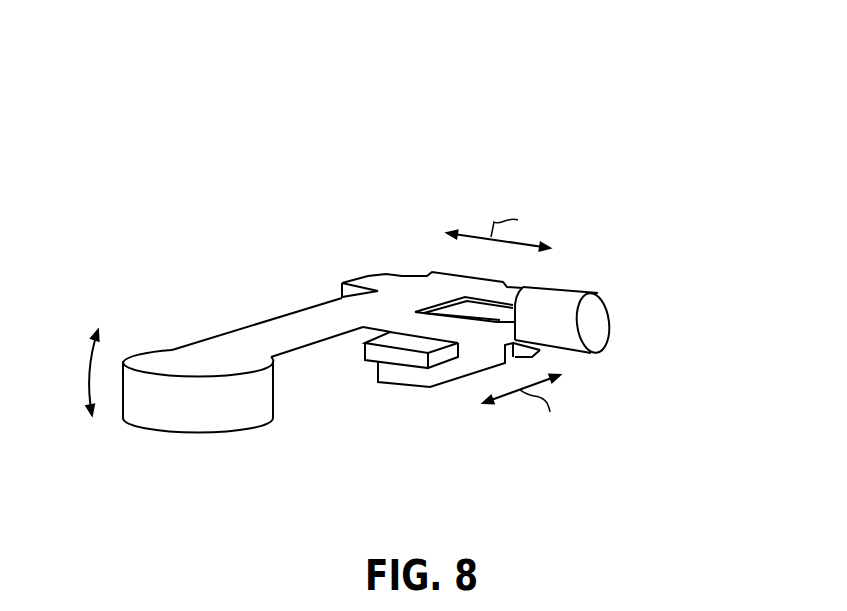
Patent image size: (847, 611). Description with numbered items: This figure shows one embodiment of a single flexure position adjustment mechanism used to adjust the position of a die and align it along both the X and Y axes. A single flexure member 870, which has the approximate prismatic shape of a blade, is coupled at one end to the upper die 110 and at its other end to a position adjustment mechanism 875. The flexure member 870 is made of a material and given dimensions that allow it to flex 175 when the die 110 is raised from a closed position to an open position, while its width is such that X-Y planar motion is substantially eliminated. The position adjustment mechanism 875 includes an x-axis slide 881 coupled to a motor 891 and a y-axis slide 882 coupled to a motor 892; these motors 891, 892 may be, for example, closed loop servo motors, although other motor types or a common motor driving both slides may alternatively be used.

The upper die 110 is at (172, 430).
The flex 175 is at (84, 365).
The single flexure member 870 is at (275, 317).
The position adjustment mechanism 875 is at (519, 250).
The x-axis slide 881 is at (381, 273).
The y-axis slide 882 is at (455, 380).
The motor 891 is at (573, 295).
The motor 892 is at (540, 350).